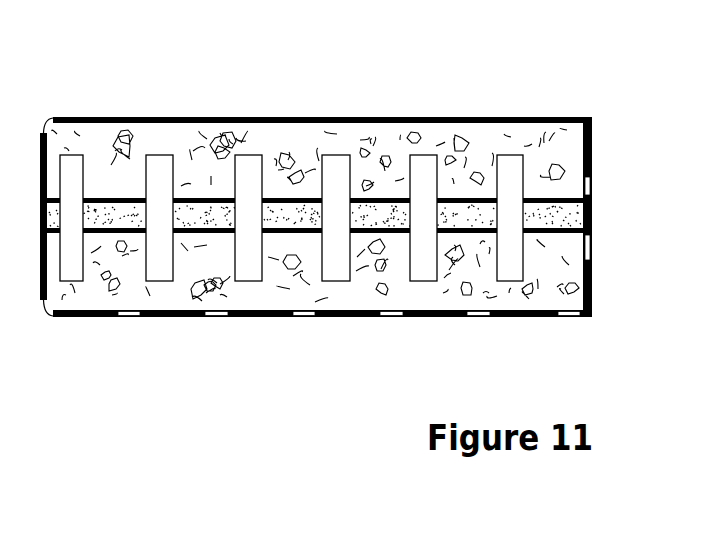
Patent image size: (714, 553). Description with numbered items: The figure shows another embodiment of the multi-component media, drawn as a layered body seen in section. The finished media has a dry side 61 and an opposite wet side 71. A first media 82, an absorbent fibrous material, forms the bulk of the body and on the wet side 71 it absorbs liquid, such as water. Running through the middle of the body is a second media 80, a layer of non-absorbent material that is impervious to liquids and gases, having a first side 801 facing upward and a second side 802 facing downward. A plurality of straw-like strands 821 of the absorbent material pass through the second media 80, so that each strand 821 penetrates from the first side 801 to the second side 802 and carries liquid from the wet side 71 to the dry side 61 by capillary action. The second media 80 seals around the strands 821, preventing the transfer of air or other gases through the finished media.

The dry side 61 is at (328, 53).
The wet side 71 is at (327, 403).
The second media 80 is at (209, 196).
The first side 801 is at (476, 199).
The second side 802 is at (473, 236).
The first media 82 is at (108, 148).
The strands 821 is at (511, 158).